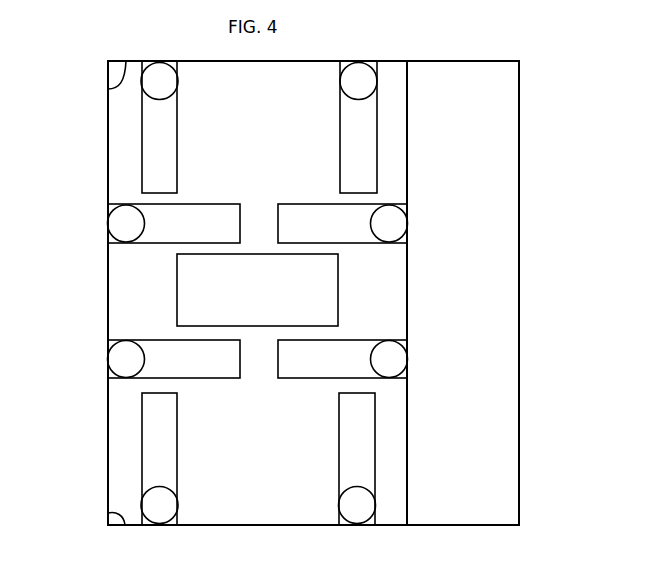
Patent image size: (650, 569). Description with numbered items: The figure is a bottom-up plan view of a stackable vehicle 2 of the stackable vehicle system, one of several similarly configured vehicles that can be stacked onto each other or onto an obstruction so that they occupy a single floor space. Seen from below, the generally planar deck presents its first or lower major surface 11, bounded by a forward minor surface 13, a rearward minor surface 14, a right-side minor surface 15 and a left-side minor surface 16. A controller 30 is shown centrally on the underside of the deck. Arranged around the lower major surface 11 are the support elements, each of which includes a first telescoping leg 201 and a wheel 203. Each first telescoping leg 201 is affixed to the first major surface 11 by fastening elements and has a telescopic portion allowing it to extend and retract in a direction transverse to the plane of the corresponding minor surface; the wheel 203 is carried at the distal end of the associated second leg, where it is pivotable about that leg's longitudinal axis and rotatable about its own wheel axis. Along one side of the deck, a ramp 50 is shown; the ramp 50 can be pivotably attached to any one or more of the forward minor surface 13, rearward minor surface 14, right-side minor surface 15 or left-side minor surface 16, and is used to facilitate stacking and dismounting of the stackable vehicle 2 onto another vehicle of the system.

The stackable vehicle 2 is at (102, 148).
The first major surface 11 is at (267, 114).
The forward minor surface 13 is at (108, 88).
The rearward minor surface 14 is at (108, 513).
The right-side minor surface 15 is at (407, 293).
The left-side minor surface 16 is at (108, 280).
The controller 30 is at (257, 290).
The ramp 50 is at (519, 129).
The first telescoping leg 201 is at (169, 114).
The wheel 203 is at (356, 80).